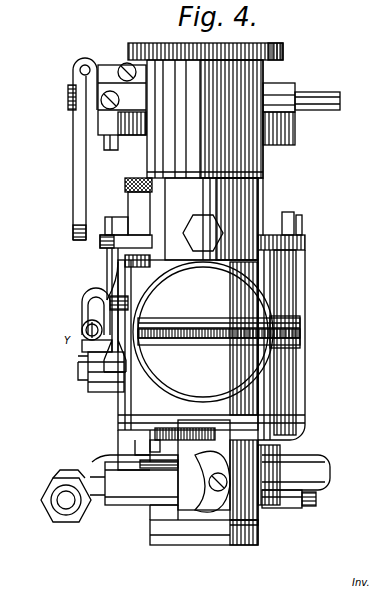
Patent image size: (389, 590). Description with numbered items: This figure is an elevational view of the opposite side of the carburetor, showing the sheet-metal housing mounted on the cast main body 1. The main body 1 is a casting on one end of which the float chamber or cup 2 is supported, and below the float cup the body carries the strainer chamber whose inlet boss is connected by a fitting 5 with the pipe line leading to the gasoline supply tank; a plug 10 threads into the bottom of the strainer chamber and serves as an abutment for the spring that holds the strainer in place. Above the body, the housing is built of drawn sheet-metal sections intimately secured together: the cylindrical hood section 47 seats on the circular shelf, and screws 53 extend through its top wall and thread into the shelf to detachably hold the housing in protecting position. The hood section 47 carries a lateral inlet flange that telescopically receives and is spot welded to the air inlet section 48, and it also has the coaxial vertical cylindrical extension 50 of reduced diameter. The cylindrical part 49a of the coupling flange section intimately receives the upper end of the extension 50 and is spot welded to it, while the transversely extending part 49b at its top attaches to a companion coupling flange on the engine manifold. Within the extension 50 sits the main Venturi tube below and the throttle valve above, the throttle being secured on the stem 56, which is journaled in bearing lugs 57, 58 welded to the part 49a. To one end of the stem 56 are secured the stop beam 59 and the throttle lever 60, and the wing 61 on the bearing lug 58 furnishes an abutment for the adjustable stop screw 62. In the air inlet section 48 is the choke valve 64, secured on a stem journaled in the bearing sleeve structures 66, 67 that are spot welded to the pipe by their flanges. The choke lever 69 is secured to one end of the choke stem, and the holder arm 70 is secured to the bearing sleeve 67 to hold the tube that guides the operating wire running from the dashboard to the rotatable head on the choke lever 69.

The main body 1 is at (263, 518).
The float chamber or cup 2 is at (306, 298).
The fitting 5 is at (112, 466).
The plug 10 is at (240, 532).
The hood section 47 is at (283, 394).
The air inlet section 48 is at (262, 372).
The cylindrical part 49a is at (262, 170).
The transversely extending part 49b is at (276, 44).
The vertical cylindrical extension 50 is at (250, 205).
The screws 53 is at (305, 262).
The stem 56 is at (330, 100).
The bearing lug 57 is at (283, 90).
The bearing lug 58 is at (101, 118).
The stop beam 59 is at (111, 70).
The throttle lever 60 is at (77, 146).
The wing 61 is at (128, 142).
The adjustable stop screw 62 is at (147, 31).
The choke valve 64 is at (199, 328).
The bearing sleeve structure 66 is at (300, 331).
The bearing sleeve structure 67 is at (100, 313).
The choke lever 69 is at (95, 358).
The holder arm 70 is at (107, 300).